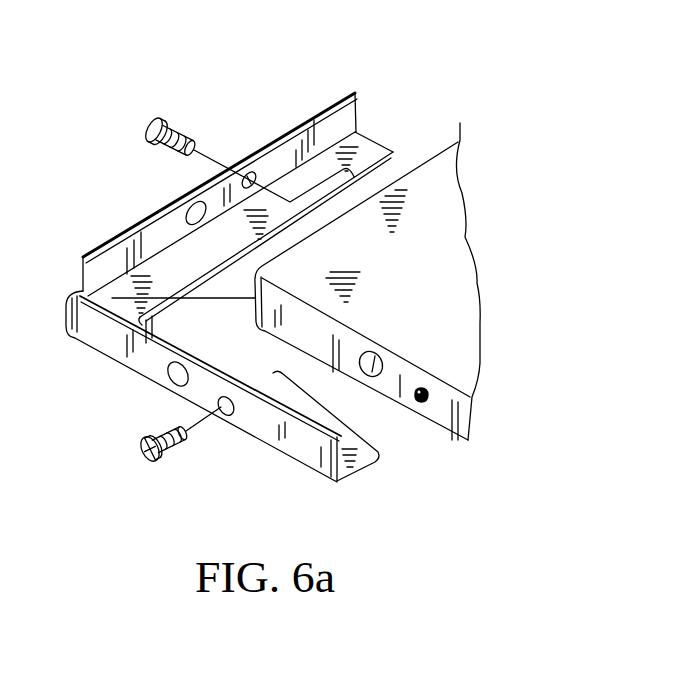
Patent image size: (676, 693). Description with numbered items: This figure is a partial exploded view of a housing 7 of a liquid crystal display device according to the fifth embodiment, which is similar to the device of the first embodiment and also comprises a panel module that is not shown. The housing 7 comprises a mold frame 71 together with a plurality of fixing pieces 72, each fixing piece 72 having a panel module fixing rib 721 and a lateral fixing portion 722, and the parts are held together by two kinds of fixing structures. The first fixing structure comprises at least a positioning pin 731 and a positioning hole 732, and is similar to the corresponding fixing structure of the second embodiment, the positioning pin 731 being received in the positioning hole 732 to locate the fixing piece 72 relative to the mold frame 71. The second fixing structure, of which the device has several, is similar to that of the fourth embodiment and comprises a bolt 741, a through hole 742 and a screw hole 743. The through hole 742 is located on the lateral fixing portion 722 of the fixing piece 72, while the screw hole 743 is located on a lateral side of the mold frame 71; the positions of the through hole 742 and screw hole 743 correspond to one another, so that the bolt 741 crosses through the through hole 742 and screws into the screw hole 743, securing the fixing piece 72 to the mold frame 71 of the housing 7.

The housing 7 is at (226, 79).
The mold frame 71 is at (448, 197).
The fixing piece 72 is at (102, 338).
The panel module fixing rib 721 is at (365, 151).
The lateral fixing portion 722 is at (297, 458).
The positioning pin 731 is at (372, 357).
The positioning hole 732 is at (173, 378).
The bolt 741 is at (170, 117).
The through hole 742 is at (250, 170).
The screw hole 743 is at (423, 402).